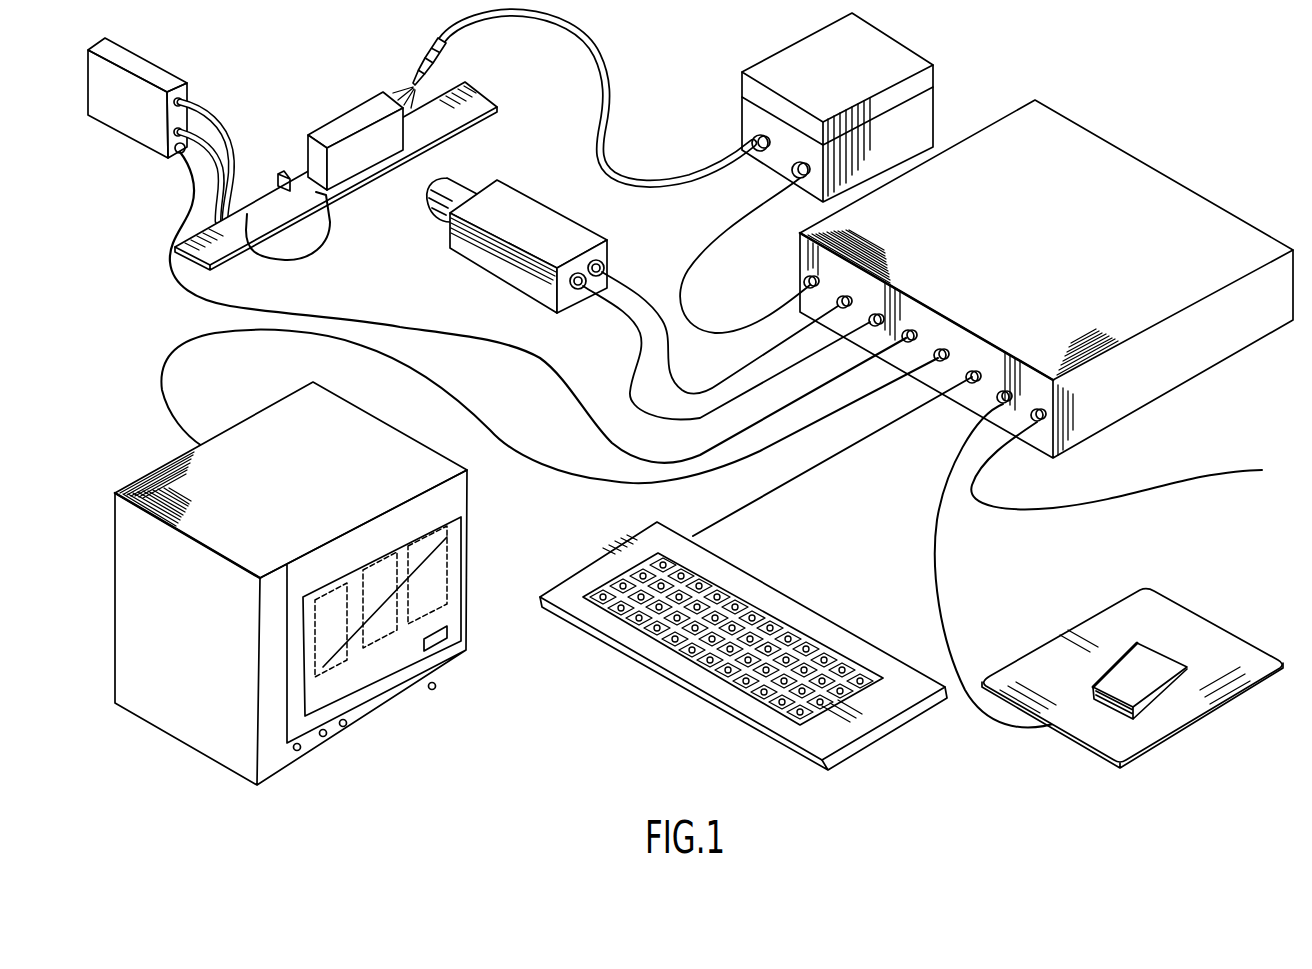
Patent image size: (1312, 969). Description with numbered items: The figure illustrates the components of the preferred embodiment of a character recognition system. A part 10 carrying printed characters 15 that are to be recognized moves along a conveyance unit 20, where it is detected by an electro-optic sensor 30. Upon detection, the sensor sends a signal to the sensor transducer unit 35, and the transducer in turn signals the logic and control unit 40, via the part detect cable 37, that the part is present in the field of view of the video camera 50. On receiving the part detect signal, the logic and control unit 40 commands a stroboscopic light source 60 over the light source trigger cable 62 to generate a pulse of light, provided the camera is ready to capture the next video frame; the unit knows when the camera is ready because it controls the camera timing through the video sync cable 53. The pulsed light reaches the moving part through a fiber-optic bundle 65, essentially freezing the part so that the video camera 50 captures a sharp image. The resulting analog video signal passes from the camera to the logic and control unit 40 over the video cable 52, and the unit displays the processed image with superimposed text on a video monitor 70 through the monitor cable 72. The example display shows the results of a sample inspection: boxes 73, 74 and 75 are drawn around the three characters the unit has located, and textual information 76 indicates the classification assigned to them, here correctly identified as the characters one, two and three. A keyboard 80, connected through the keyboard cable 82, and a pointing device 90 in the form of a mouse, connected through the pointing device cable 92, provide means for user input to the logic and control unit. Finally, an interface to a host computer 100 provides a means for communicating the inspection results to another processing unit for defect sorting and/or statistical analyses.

The part 10 is at (352, 100).
The printed characters 15 is at (402, 136).
The conveyance unit 20 is at (498, 95).
The electro-optic sensor 30 is at (282, 173).
The sensor transducer unit 35 is at (157, 60).
The part detect cable 37 is at (387, 323).
The logic and control unit 40 is at (1175, 175).
The video camera 50 is at (533, 192).
The video cable 52 is at (630, 366).
The video sync cable 53 is at (642, 298).
The stroboscopic light source 60 is at (929, 52).
The light source trigger cable 62 is at (690, 262).
The fiber-optic bundle 65 is at (614, 78).
The video monitor 70 is at (167, 462).
The monitor cable 72 is at (570, 472).
The box 73 is at (312, 590).
The box 74 is at (368, 565).
The box 75 is at (422, 535).
The textual information 76 is at (450, 632).
The keyboard 80 is at (653, 676).
The keyboard cable 82 is at (780, 481).
The pointing device (mouse) 90 is at (1097, 668).
The pointing device cable 92 is at (937, 562).
The interface to a host computer 100 is at (1197, 468).